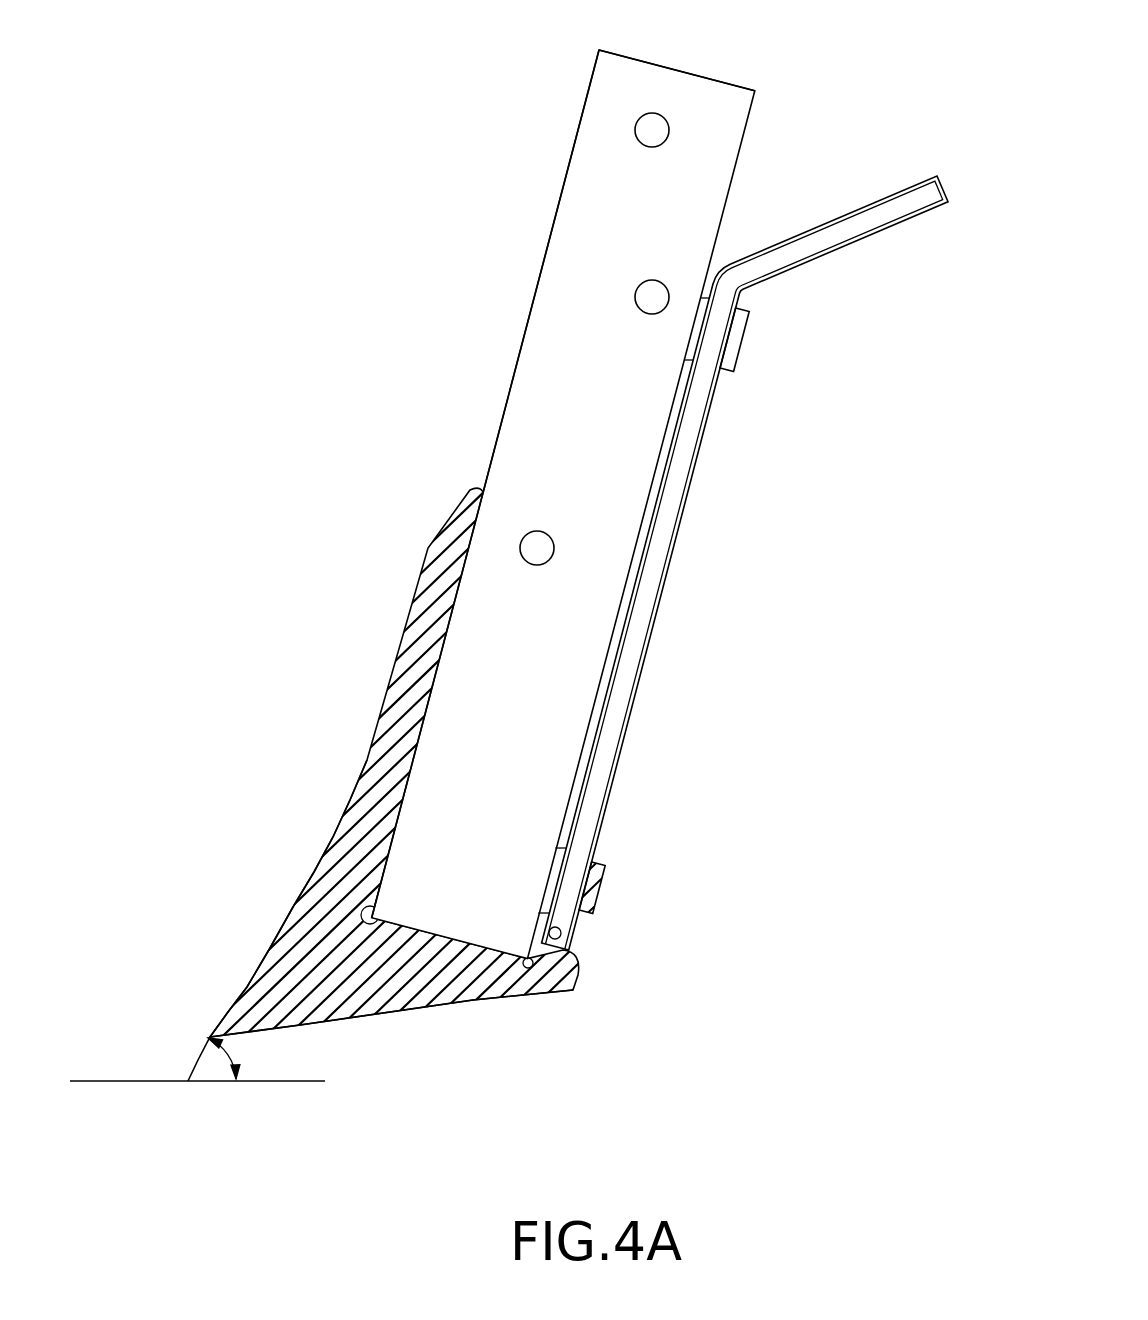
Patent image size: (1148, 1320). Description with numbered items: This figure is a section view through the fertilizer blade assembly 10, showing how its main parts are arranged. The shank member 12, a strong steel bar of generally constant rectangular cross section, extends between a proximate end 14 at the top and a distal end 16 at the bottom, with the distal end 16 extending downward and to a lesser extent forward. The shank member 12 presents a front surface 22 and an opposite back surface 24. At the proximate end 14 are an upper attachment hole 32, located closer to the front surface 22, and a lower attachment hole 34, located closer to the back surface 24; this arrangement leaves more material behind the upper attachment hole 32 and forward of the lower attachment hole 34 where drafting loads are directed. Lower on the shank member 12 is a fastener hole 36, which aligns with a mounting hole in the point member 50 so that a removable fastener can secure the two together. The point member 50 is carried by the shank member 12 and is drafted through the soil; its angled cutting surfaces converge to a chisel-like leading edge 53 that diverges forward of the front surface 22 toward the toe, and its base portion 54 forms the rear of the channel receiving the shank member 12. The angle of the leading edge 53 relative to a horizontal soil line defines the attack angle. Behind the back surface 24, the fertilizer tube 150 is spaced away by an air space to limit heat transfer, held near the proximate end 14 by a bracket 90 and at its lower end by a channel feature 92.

The fertilizer blade assembly 10 is at (509, 663).
The shank member 12 is at (508, 828).
The proximate end 14 is at (707, 79).
The distal end 16 is at (457, 942).
The front surface 22 is at (567, 162).
The back surface 24 is at (743, 528).
The upper attachment hole 32 is at (645, 147).
The lower attachment hole 34 is at (645, 313).
The shank fastener hole 36 is at (545, 535).
The point member 50 is at (370, 673).
The leading edge 53 is at (265, 952).
The base portion 54 is at (345, 1059).
The bracket 90 is at (745, 340).
The channel feature 92 is at (607, 888).
The fertilizer tube 150 is at (635, 620).